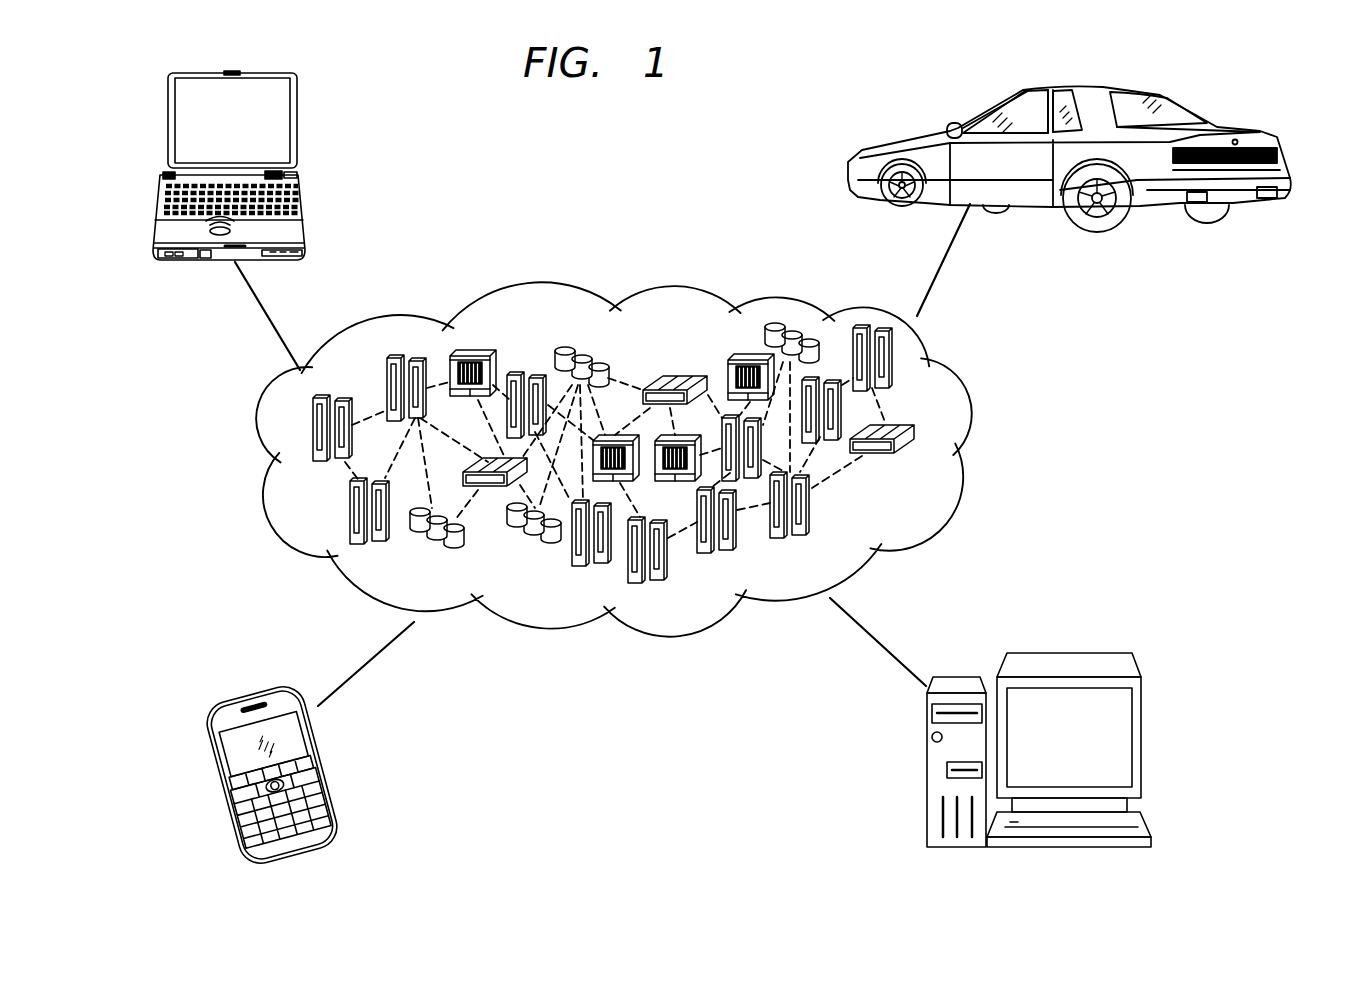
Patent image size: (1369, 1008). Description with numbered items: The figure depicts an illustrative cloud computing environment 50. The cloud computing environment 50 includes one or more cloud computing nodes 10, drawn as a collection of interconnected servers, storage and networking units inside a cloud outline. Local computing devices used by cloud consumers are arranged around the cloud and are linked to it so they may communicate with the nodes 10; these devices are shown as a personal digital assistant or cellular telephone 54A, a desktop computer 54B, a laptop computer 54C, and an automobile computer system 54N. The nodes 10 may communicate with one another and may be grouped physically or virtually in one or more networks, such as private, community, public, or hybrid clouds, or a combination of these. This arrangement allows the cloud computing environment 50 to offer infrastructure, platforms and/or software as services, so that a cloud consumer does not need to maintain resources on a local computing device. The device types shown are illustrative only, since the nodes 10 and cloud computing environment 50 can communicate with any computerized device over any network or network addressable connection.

The cloud computing nodes 10 is at (920, 465).
The cloud computing environment 50 is at (968, 383).
The personal digital assistant or cellular telephone 54A is at (215, 765).
The desktop computer 54B is at (1072, 653).
The laptop computer 54C is at (167, 118).
The automobile computer system 54N is at (1250, 130).